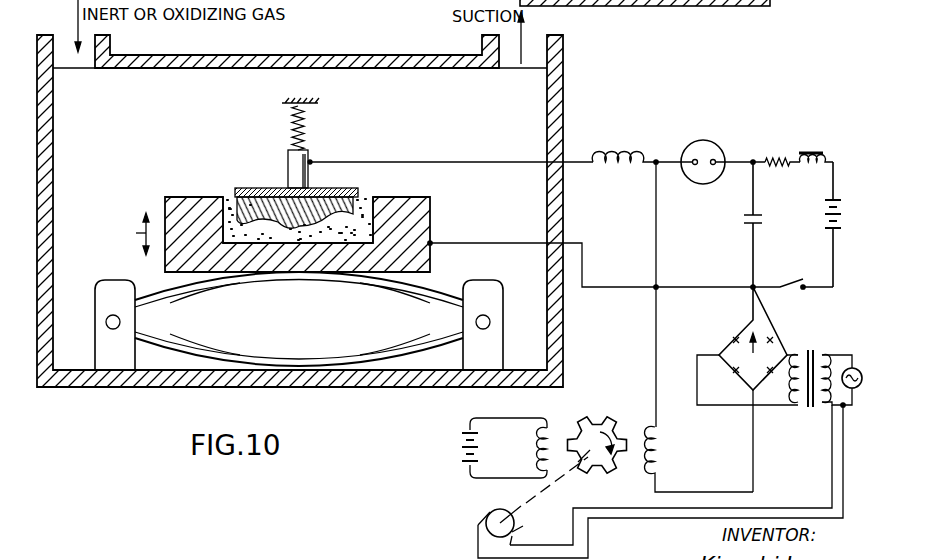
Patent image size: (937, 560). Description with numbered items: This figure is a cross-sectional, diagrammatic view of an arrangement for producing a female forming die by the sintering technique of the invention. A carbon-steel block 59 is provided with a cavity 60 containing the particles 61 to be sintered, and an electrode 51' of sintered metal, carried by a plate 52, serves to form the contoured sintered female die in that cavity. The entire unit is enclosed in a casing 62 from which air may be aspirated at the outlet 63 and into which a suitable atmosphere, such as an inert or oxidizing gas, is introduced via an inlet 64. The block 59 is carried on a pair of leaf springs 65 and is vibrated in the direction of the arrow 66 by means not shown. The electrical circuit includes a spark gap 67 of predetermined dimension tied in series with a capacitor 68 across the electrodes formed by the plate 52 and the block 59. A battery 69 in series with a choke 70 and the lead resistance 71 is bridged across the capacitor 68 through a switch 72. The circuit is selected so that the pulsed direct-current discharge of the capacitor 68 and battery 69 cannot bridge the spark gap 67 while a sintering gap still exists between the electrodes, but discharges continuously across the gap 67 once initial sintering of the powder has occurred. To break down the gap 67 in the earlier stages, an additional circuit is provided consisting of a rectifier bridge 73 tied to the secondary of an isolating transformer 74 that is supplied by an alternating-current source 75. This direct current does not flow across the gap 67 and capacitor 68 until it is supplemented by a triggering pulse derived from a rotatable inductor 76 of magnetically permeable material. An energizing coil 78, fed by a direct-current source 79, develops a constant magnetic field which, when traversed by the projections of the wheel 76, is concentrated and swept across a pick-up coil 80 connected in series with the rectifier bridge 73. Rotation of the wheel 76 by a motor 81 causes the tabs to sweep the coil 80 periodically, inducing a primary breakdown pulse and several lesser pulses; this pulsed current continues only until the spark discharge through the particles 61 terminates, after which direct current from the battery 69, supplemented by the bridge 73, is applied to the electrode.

The electrode 51' is at (295, 197).
The plate 52 is at (244, 195).
The carbon-steel block 59 is at (432, 220).
The cavity 60 is at (384, 206).
The particles 61 is at (368, 205).
The casing 62 is at (360, 58).
The aspiration outlet 63 is at (514, 62).
The inlet 64 is at (75, 62).
The leaf springs 65 is at (150, 340).
The arrow 66 is at (127, 234).
The spark gap 67 is at (704, 142).
The capacitor 68 is at (746, 216).
The battery 69 is at (822, 212).
The choke 70 is at (820, 153).
The lead resistance 71 is at (779, 157).
The switch 72 is at (786, 282).
The rectifier bridge 73 is at (743, 324).
The isolating transformer 74 is at (810, 354).
The alternating-current source 75 is at (855, 366).
The rotatable inductor 76 is at (605, 418).
The energizing coil 78 is at (536, 450).
The battery 79 is at (460, 450).
The pick-up coil 80 is at (665, 452).
The motor 81 is at (517, 523).